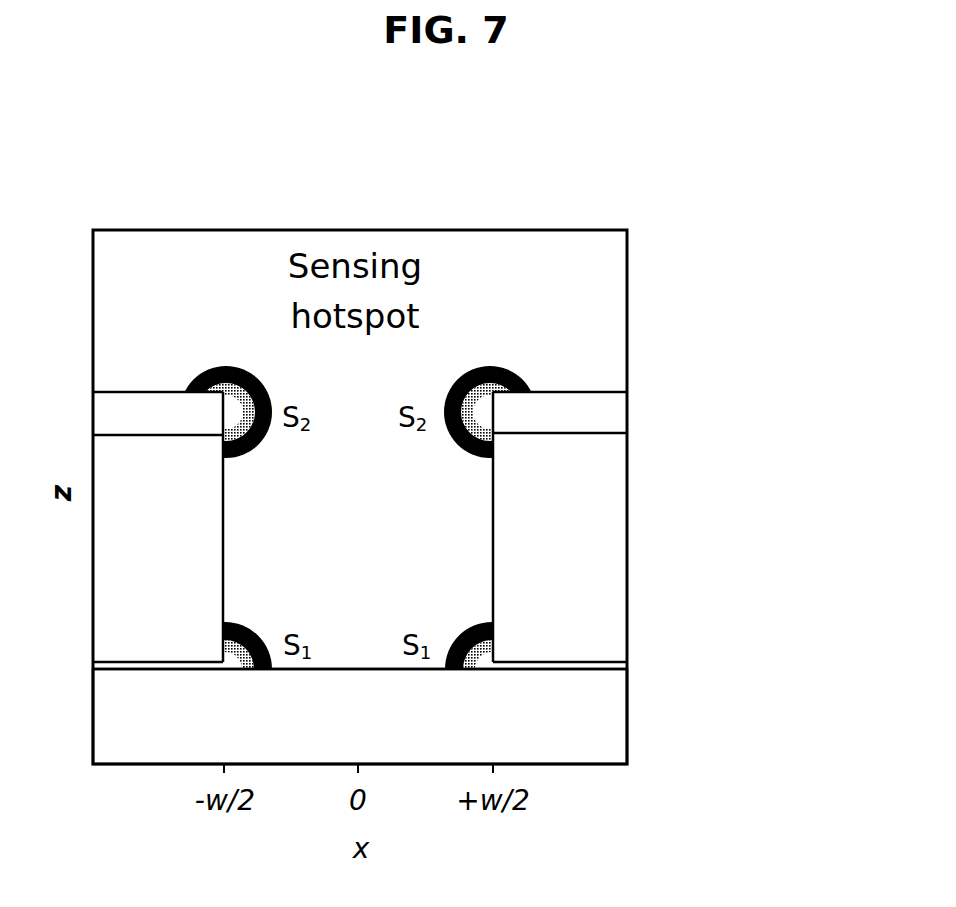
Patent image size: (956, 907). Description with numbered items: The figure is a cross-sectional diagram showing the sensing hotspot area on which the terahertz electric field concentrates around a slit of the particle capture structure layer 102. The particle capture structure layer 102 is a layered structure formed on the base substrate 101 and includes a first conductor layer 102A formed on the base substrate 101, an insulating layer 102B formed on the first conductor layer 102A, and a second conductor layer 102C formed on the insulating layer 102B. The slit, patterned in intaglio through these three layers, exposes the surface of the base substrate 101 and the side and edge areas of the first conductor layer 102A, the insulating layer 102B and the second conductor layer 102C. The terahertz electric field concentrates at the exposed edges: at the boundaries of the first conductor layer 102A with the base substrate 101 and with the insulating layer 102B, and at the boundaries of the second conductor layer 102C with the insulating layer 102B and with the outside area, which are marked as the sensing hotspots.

The base substrate 101 is at (615, 741).
The particle capture structure layer 102 is at (472, 547).
The first conductor layer 102A is at (426, 679).
The insulating layer 102B is at (615, 560).
The second conductor layer 102C is at (615, 413).